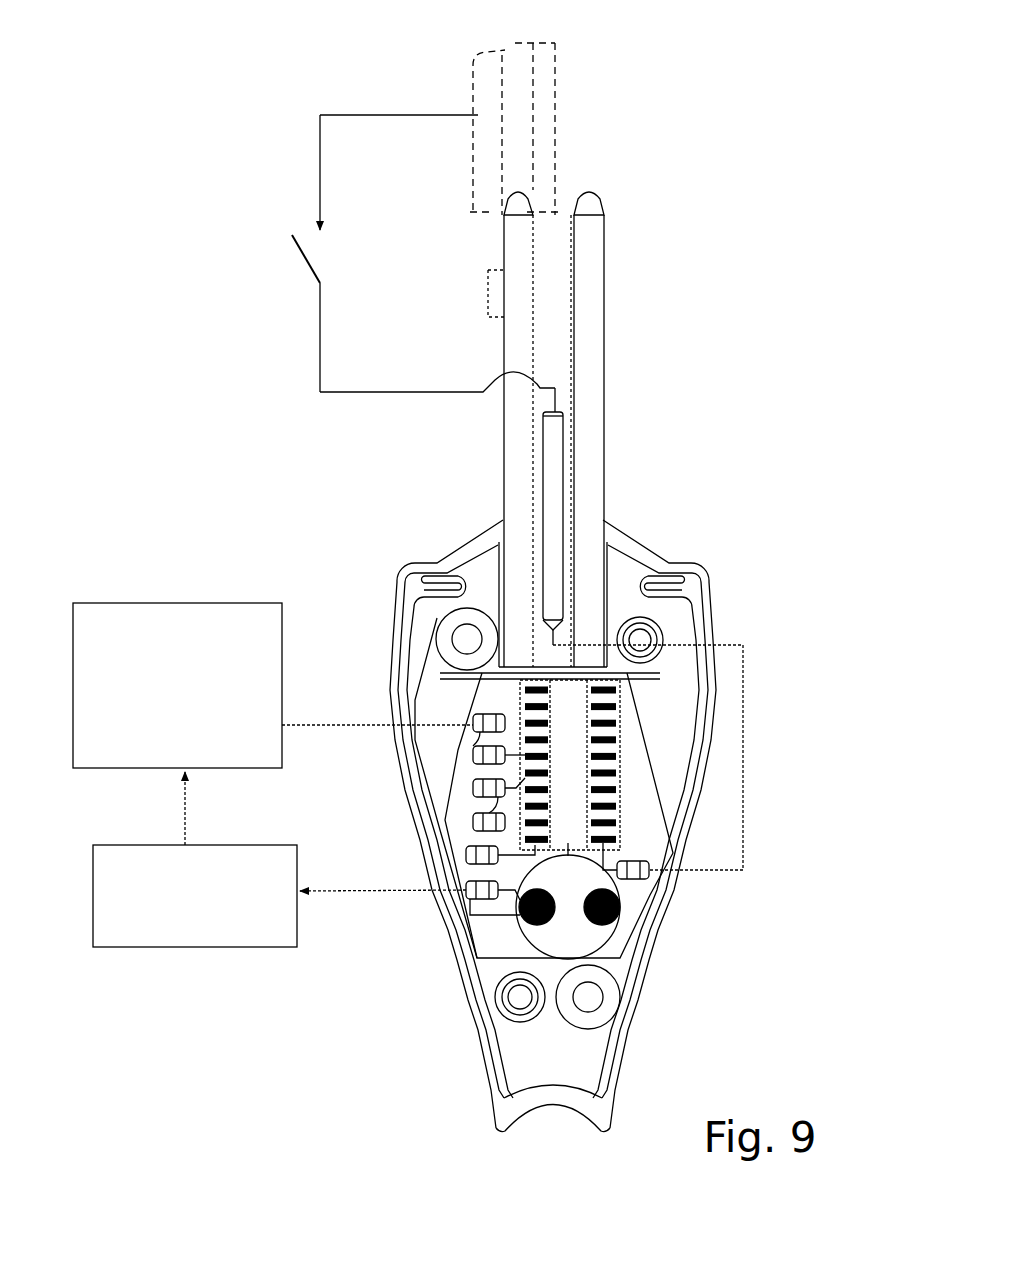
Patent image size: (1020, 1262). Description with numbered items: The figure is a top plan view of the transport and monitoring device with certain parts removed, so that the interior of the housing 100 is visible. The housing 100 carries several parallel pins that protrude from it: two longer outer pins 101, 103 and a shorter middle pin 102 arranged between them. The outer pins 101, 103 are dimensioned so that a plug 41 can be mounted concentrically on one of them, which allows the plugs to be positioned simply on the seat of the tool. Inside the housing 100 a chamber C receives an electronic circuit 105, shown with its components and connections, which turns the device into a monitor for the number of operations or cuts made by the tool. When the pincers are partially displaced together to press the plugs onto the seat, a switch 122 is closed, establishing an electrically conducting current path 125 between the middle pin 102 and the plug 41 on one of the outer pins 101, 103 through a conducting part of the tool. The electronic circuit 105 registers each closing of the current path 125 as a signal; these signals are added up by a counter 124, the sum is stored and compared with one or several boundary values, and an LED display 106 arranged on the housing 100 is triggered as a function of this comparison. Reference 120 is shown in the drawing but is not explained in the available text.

The plug 41 is at (552, 118).
The outer pin 101 is at (512, 258).
The middle pin 102 is at (555, 465).
The outer pin 103 is at (588, 270).
The electronic circuit 105 is at (632, 824).
The LED display 106 is at (170, 622).
The housing 100 is at (663, 917).
The circuit board 120 is at (458, 1002).
The switch 122 is at (303, 255).
The counter 124 is at (210, 921).
The current path 125 is at (362, 393).
The chamber C is at (675, 658).